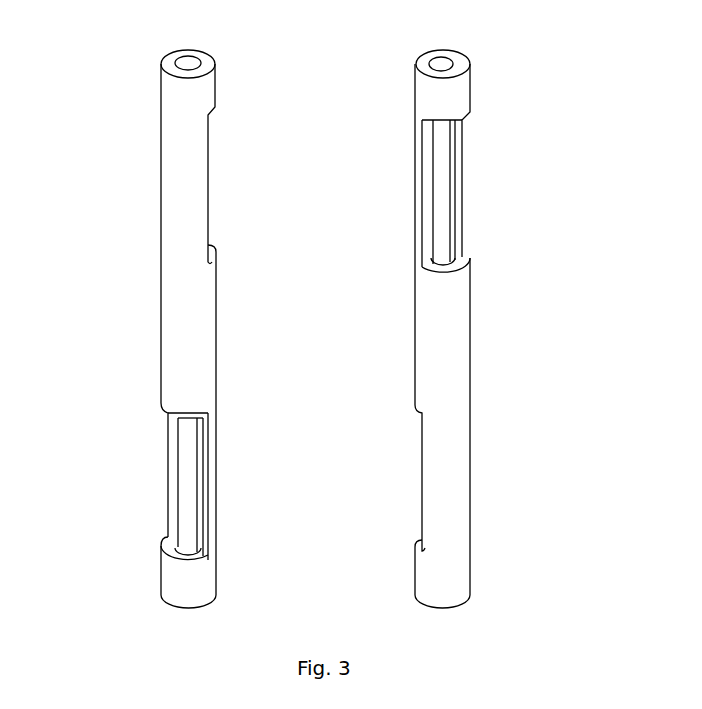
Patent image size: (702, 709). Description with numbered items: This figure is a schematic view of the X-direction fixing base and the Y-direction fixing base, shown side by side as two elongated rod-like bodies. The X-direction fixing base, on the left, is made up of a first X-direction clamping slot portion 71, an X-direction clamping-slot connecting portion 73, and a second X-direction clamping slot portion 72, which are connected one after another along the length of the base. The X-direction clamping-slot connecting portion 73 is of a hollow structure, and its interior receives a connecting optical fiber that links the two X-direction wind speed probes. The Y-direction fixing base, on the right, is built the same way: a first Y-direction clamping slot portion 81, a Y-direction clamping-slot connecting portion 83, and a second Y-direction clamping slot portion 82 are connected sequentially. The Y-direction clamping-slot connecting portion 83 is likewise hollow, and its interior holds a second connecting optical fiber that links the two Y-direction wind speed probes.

The first X-direction clamping slot portion 71 is at (208, 191).
The second X-direction clamping slot portion 72 is at (187, 500).
The X-direction clamping-slot connecting portion 73 is at (192, 352).
The first Y-direction clamping slot portion 81 is at (432, 193).
The second Y-direction clamping slot portion 82 is at (422, 487).
The Y-direction clamping-slot connecting portion 83 is at (441, 358).